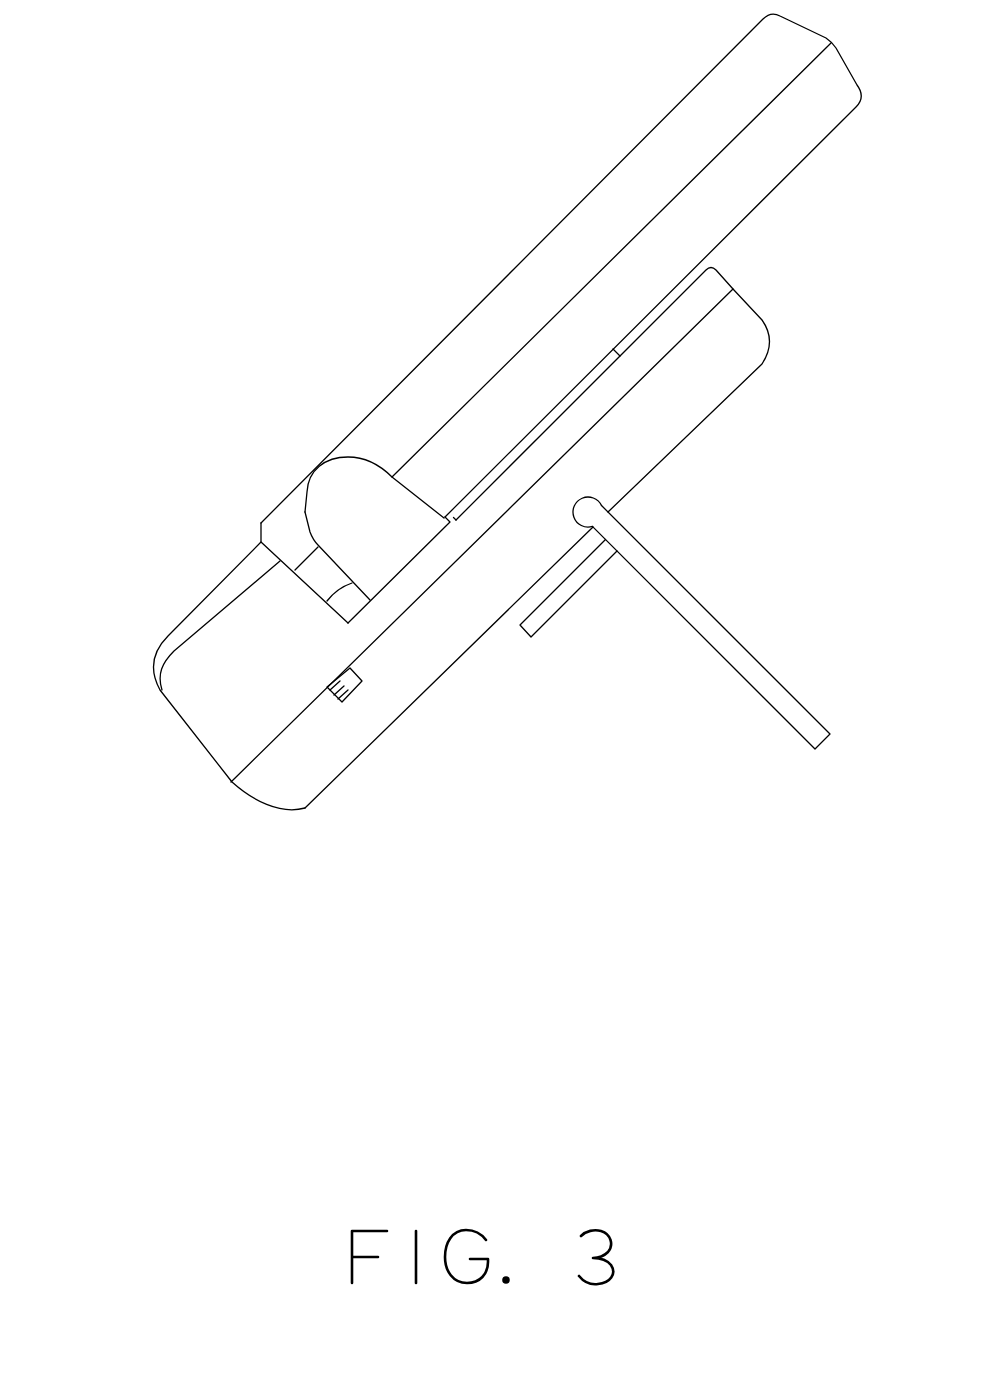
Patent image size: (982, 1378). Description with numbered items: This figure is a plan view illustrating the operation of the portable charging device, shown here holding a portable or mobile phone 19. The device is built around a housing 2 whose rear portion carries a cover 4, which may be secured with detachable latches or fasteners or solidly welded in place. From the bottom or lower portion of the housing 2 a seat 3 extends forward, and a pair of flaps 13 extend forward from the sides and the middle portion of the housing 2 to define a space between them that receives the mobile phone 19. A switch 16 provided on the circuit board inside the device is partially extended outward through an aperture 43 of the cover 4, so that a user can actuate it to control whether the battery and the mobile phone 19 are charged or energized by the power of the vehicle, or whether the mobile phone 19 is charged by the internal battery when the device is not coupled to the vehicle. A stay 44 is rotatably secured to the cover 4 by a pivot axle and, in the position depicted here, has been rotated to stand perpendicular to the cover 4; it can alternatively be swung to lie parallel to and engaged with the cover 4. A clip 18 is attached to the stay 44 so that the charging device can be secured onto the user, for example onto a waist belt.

The mobile phone 19 is at (600, 217).
The housing 2 is at (710, 295).
The cover 4 is at (727, 366).
The flaps 13 is at (328, 495).
The seat 3 is at (216, 598).
The stay 44 is at (737, 655).
The clip 18 is at (555, 602).
The aperture 43 is at (362, 681).
The switch 16 is at (342, 702).